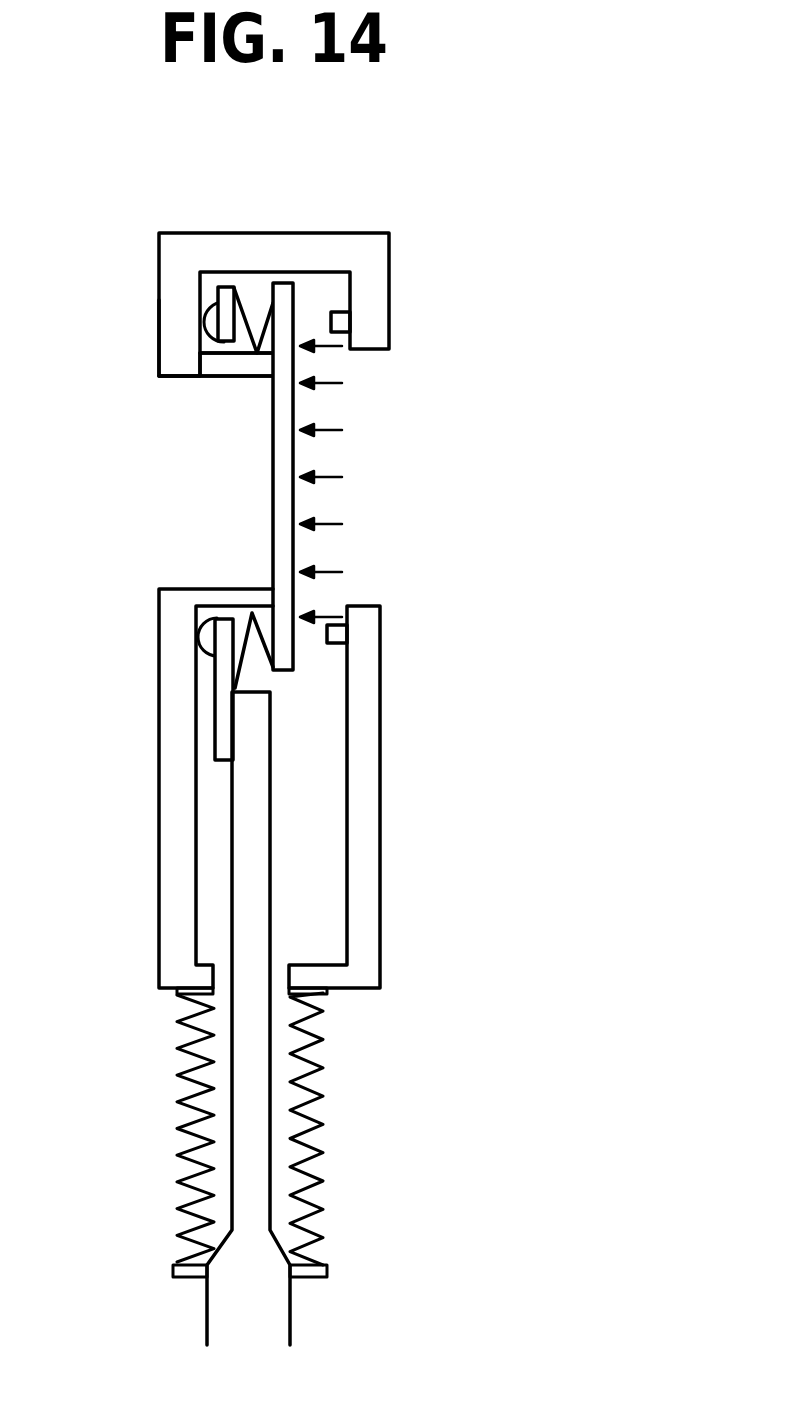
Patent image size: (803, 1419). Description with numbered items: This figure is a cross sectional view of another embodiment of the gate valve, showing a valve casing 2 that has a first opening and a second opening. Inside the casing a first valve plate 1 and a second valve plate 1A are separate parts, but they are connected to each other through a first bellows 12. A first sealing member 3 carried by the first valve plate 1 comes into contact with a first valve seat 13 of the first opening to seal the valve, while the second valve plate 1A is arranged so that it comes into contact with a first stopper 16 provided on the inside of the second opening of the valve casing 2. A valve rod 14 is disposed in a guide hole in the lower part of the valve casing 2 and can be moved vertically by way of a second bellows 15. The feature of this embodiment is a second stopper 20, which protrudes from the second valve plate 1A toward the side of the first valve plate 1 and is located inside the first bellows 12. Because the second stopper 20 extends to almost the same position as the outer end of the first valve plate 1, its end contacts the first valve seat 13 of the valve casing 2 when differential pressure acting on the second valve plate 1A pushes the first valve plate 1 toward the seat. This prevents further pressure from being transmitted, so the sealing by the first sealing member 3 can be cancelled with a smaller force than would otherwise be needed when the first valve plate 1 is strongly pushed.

The first valve plate 1 is at (216, 293).
The second valve plate 1A is at (288, 458).
The valve casing 2 is at (370, 255).
The first sealing member 3 is at (208, 323).
The first bellows 12 is at (246, 325).
The first valve seat 13 is at (197, 342).
The valve rod 14 is at (248, 1312).
The second bellows 15 is at (180, 1137).
The first stopper 16 is at (340, 333).
The second stopper 20 is at (230, 589).